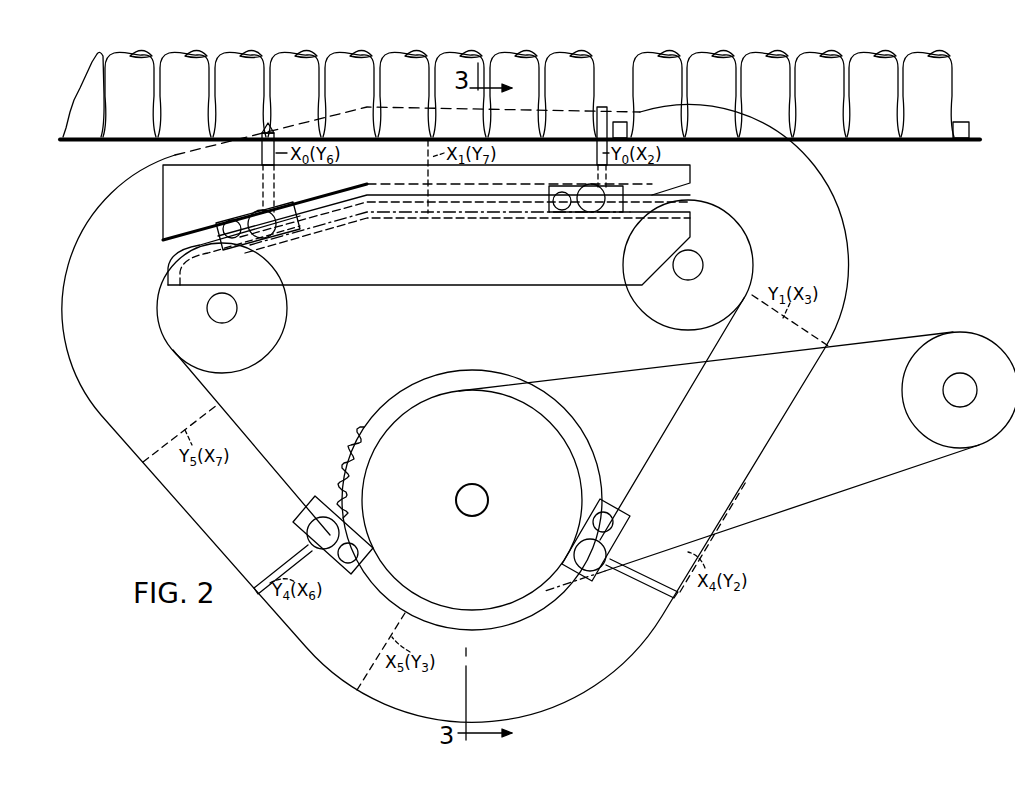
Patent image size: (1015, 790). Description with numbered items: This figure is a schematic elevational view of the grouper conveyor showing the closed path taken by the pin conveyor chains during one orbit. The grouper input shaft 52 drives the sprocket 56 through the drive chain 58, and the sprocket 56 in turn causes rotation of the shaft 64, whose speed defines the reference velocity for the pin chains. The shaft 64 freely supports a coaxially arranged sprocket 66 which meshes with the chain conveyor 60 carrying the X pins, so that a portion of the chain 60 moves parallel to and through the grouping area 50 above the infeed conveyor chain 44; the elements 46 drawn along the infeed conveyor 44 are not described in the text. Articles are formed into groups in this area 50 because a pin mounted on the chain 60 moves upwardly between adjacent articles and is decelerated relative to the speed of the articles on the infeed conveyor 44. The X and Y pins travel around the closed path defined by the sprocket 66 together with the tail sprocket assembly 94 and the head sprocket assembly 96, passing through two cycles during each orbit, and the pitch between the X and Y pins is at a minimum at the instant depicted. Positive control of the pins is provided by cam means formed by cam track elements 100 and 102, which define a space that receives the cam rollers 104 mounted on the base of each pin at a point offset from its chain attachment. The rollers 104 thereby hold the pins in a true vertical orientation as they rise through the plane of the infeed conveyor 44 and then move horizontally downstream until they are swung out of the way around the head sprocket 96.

The infeed conveyor chain 44 is at (96, 143).
The pusher stop 46 is at (619, 121).
The grouping area 50 is at (268, 33).
The grouper input shaft 52 is at (977, 390).
The sprocket 56 is at (362, 436).
The drive chain 58 is at (843, 487).
The chain conveyor 60 is at (233, 413).
The shaft 64 is at (485, 490).
The sprocket 66 is at (347, 455).
The tail sprocket assembly 94 is at (283, 297).
The head sprocket assembly 96 is at (646, 295).
The cam track element 100 is at (163, 186).
The cam track element 102 is at (170, 267).
The cam roller 104 is at (222, 226).